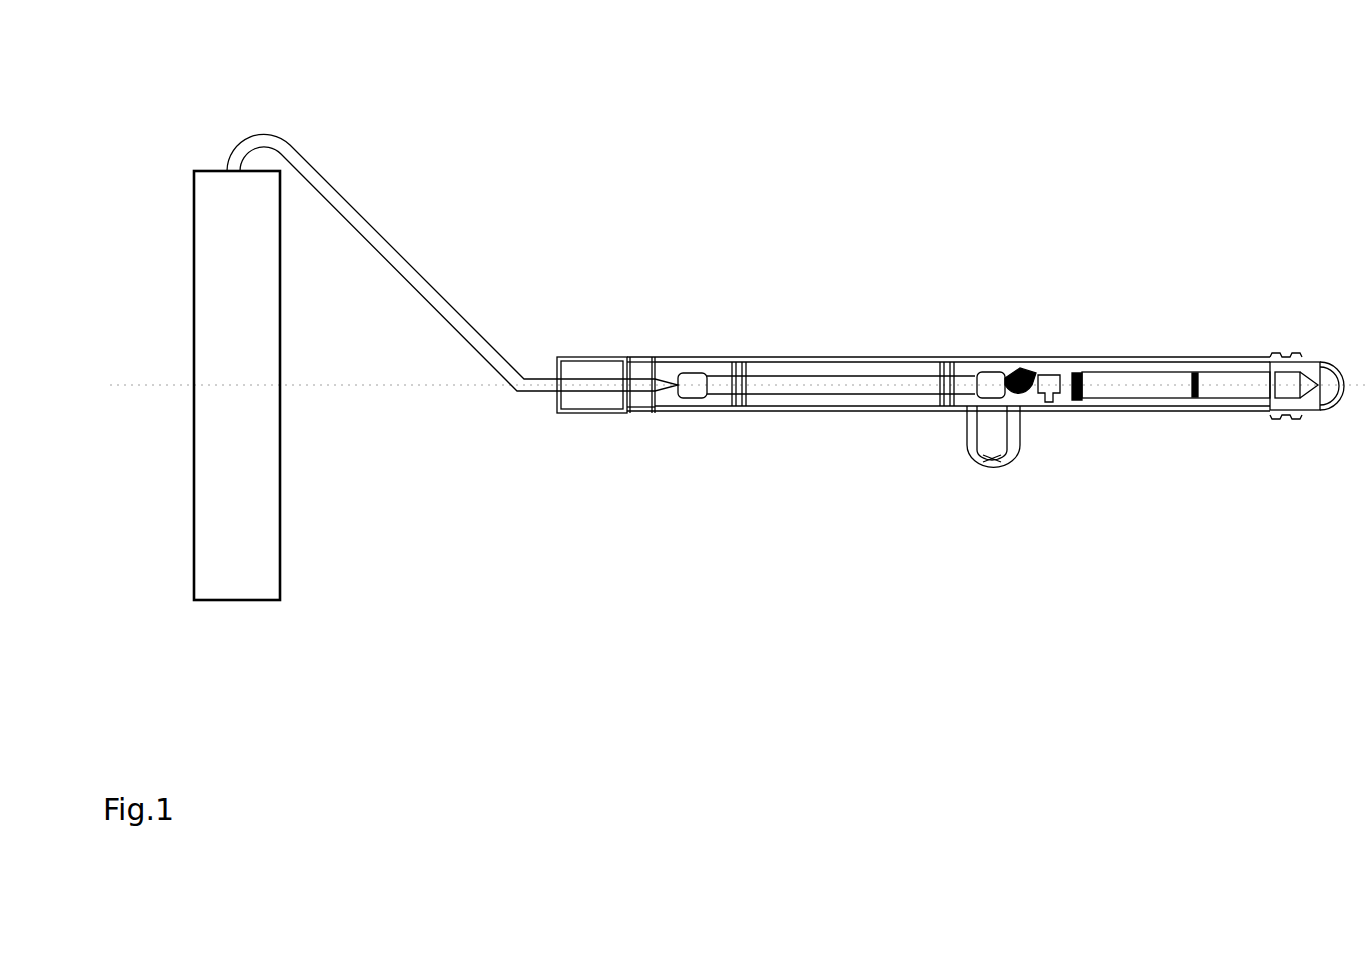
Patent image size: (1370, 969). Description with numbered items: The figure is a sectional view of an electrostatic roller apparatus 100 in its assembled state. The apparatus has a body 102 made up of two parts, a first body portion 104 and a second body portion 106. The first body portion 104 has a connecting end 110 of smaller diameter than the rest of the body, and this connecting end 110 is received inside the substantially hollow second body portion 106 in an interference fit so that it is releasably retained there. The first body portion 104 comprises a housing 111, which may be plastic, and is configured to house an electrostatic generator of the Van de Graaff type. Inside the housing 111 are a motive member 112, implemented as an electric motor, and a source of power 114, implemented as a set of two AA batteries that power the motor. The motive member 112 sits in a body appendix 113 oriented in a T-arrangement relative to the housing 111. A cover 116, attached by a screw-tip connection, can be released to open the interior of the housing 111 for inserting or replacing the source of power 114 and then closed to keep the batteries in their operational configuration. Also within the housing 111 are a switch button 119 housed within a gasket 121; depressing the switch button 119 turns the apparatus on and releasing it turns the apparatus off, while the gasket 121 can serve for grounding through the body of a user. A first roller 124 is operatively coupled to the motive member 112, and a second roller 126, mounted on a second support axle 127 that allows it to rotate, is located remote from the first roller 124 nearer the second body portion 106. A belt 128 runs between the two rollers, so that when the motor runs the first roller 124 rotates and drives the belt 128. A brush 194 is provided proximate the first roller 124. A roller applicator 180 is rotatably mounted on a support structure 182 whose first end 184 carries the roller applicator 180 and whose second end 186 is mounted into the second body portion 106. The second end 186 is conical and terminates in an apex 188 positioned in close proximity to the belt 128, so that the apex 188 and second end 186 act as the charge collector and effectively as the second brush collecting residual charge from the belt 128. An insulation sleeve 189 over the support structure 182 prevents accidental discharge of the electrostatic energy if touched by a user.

The electrostatic roller apparatus 100 is at (842, 132).
The body 102 is at (748, 564).
The first body portion 104 is at (1172, 412).
The second body portion 106 is at (590, 413).
The connecting end 110 is at (662, 357).
The housing 111 is at (1148, 370).
The motive member 112 is at (985, 468).
The body appendix 113 is at (1022, 447).
The source of power 114 is at (1238, 370).
The cover 116 is at (1335, 366).
The switch button 119 is at (1040, 366).
The gasket 121 is at (1085, 370).
The first roller 124 is at (995, 370).
The second roller 126 is at (700, 357).
The second support axle 127 is at (712, 407).
The belt 128 is at (858, 357).
The roller applicator 180 is at (204, 525).
The support structure 182 is at (400, 243).
The first end 184 is at (237, 157).
The second end 186 is at (590, 357).
The apex 188 is at (664, 396).
The insulation sleeve 189 is at (443, 290).
The brush 194 is at (1020, 368).